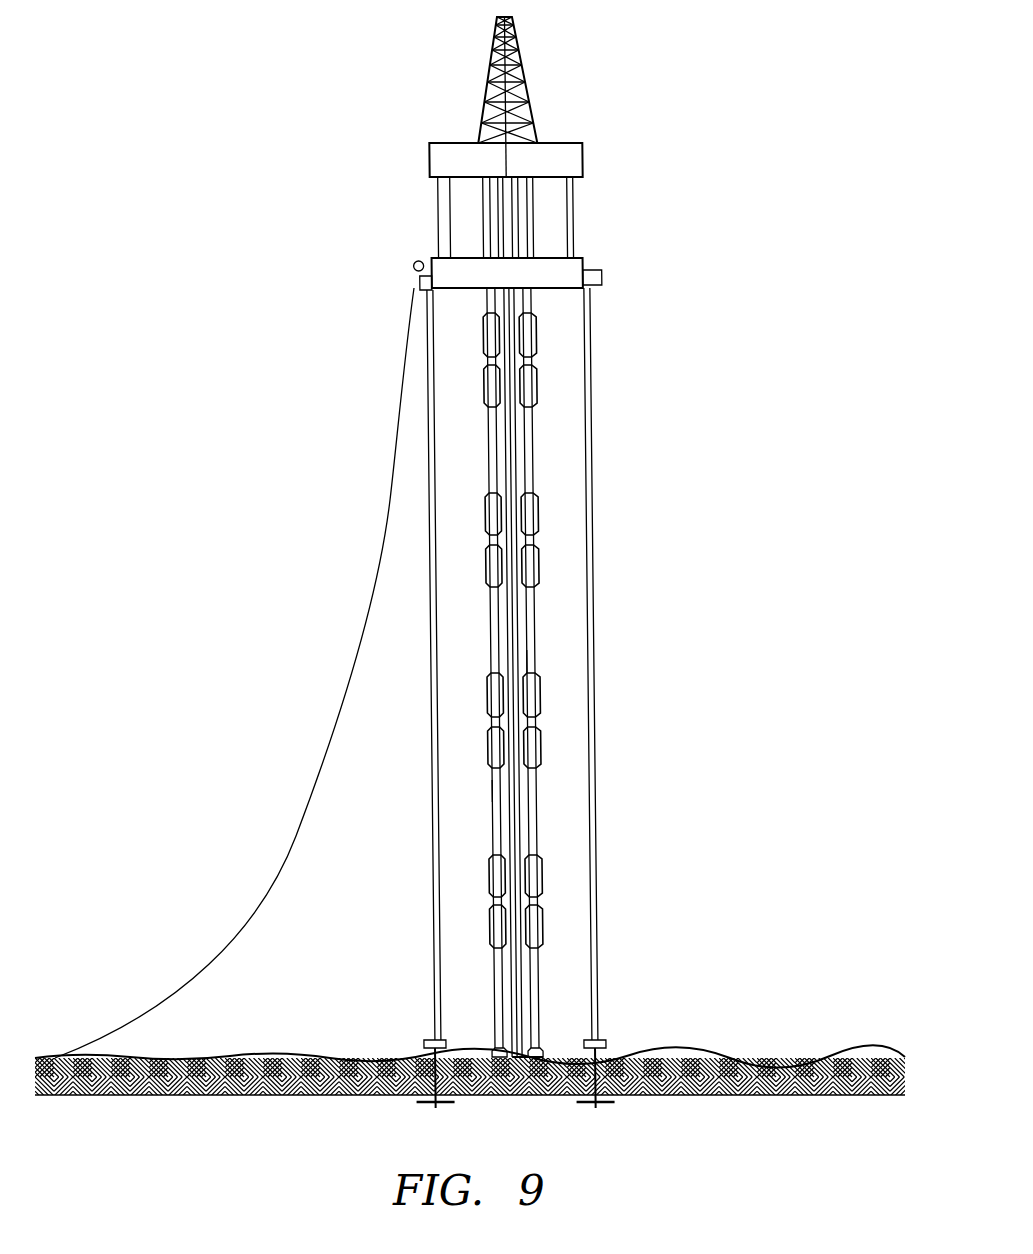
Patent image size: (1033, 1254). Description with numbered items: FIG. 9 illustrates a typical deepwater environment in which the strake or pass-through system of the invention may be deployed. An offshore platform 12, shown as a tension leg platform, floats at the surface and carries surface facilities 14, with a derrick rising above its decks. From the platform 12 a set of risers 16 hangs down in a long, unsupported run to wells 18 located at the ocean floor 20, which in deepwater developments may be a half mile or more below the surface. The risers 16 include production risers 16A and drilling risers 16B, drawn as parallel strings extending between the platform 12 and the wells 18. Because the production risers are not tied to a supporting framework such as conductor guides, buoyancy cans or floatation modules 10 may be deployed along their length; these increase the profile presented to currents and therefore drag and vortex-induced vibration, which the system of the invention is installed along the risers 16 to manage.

The tubular tool section 10 is at (537, 378).
The offshore platform 12 is at (574, 81).
The surface facilities 14 is at (430, 160).
The risers 16 is at (536, 455).
The production risers 16A is at (539, 673).
The drilling risers 16B is at (505, 645).
The wells 18 is at (543, 1053).
The ocean floor 20 is at (765, 1057).